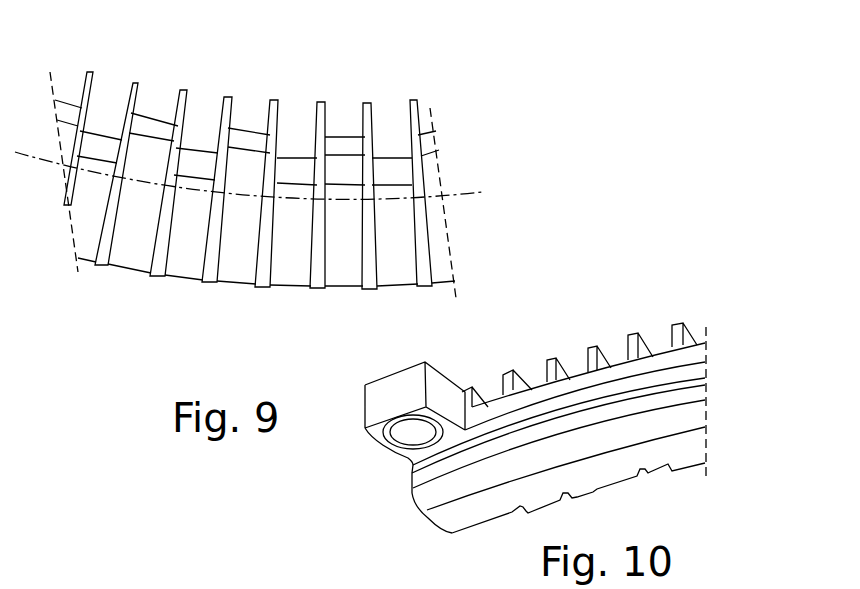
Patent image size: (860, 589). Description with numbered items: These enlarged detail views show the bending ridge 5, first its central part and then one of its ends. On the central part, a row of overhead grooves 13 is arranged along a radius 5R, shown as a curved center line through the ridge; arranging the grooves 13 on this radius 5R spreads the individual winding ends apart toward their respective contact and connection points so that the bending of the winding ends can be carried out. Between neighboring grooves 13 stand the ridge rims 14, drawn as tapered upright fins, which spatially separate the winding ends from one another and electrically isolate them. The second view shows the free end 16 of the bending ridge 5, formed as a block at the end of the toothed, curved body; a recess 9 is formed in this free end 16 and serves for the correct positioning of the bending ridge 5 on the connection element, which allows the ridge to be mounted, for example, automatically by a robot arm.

In FIG. 9, the bending ridge 5 is at (58, 72).
In FIG. 10, the bending ridge 5 is at (688, 300).
In FIG. 9, the radius 5R is at (485, 192).
In FIG. 9, the ridge rims 14 is at (136, 82).
In FIG. 9, the overhead grooves 13 is at (183, 258).
In FIG. 10, the free end 16 is at (365, 410).
In FIG. 10, the recess 9 is at (409, 433).